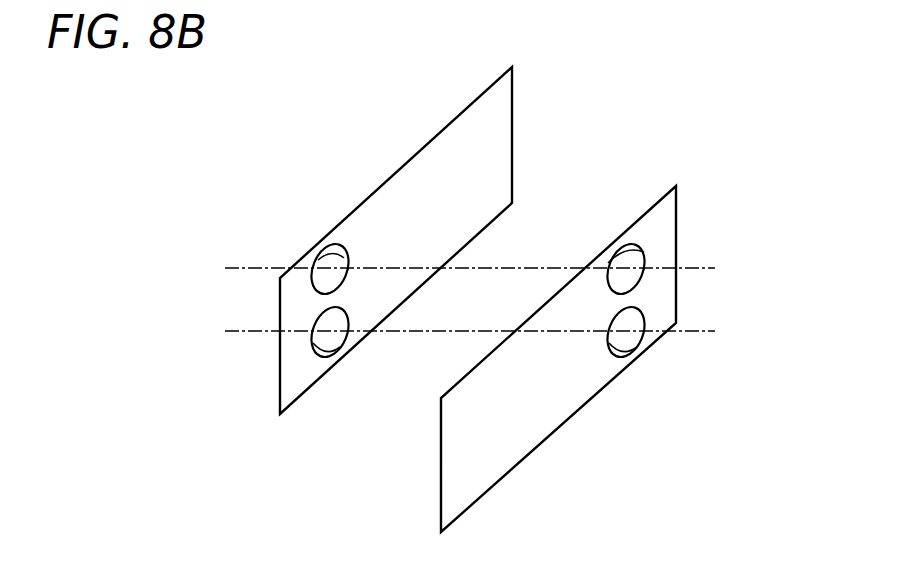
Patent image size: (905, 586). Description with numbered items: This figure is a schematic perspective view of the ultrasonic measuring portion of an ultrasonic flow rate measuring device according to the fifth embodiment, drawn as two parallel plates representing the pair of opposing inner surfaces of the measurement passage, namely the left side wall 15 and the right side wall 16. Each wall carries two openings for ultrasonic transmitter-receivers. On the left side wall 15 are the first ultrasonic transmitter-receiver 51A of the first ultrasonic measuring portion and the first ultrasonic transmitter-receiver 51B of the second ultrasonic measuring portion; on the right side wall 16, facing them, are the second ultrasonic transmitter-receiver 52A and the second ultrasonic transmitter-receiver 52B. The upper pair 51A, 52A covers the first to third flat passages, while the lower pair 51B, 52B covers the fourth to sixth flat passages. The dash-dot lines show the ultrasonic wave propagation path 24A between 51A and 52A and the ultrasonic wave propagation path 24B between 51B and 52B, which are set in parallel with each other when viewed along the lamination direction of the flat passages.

The left side wall 15 is at (400, 203).
The right side wall 16 is at (527, 427).
The ultrasonic wave propagation path 24A is at (519, 268).
The ultrasonic wave propagation path 24B is at (421, 331).
The first ultrasonic transmitter-receiver 51A is at (324, 245).
The first ultrasonic transmitter-receiver 51B is at (313, 348).
The second ultrasonic transmitter-receiver 52A is at (643, 254).
The second ultrasonic transmitter-receiver 52B is at (633, 348).